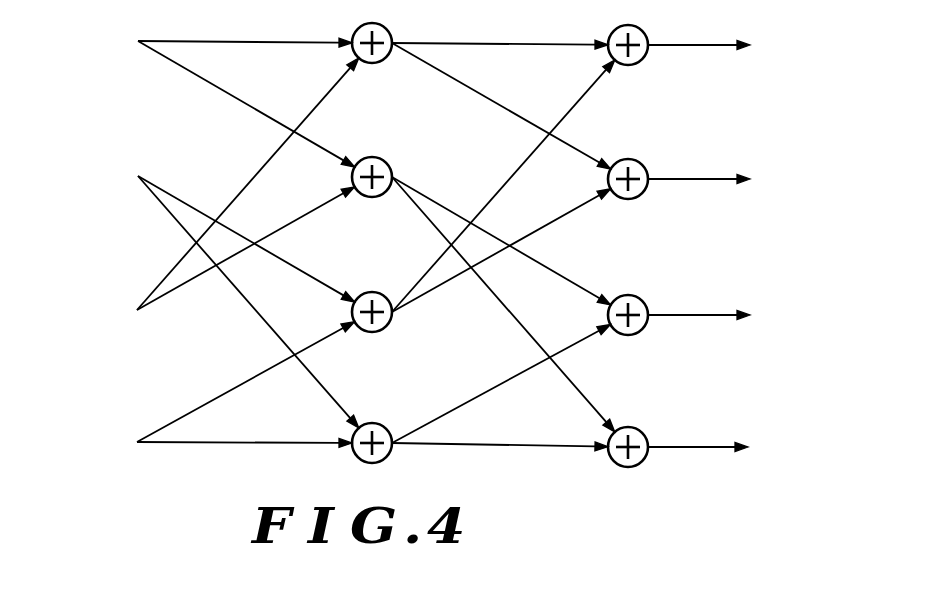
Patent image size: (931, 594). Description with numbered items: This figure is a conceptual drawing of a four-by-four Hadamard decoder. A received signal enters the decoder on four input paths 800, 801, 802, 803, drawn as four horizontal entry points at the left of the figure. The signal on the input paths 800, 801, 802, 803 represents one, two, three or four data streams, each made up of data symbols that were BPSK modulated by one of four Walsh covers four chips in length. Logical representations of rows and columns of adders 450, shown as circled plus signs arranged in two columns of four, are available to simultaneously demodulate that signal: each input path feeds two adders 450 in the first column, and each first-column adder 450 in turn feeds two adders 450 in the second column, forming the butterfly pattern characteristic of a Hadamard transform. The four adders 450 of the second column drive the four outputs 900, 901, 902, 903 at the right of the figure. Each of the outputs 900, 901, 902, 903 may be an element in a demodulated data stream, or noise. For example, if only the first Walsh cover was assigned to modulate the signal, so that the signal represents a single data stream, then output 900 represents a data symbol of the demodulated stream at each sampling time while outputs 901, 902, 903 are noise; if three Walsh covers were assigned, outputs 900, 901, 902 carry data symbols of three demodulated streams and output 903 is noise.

The adders 450 is at (361, 27).
The input path 800 is at (130, 41).
The input path 801 is at (132, 175).
The input path 802 is at (131, 310).
The input path 803 is at (131, 441).
The output 900 is at (755, 42).
The output 901 is at (748, 175).
The output 902 is at (748, 306).
The output 903 is at (747, 441).